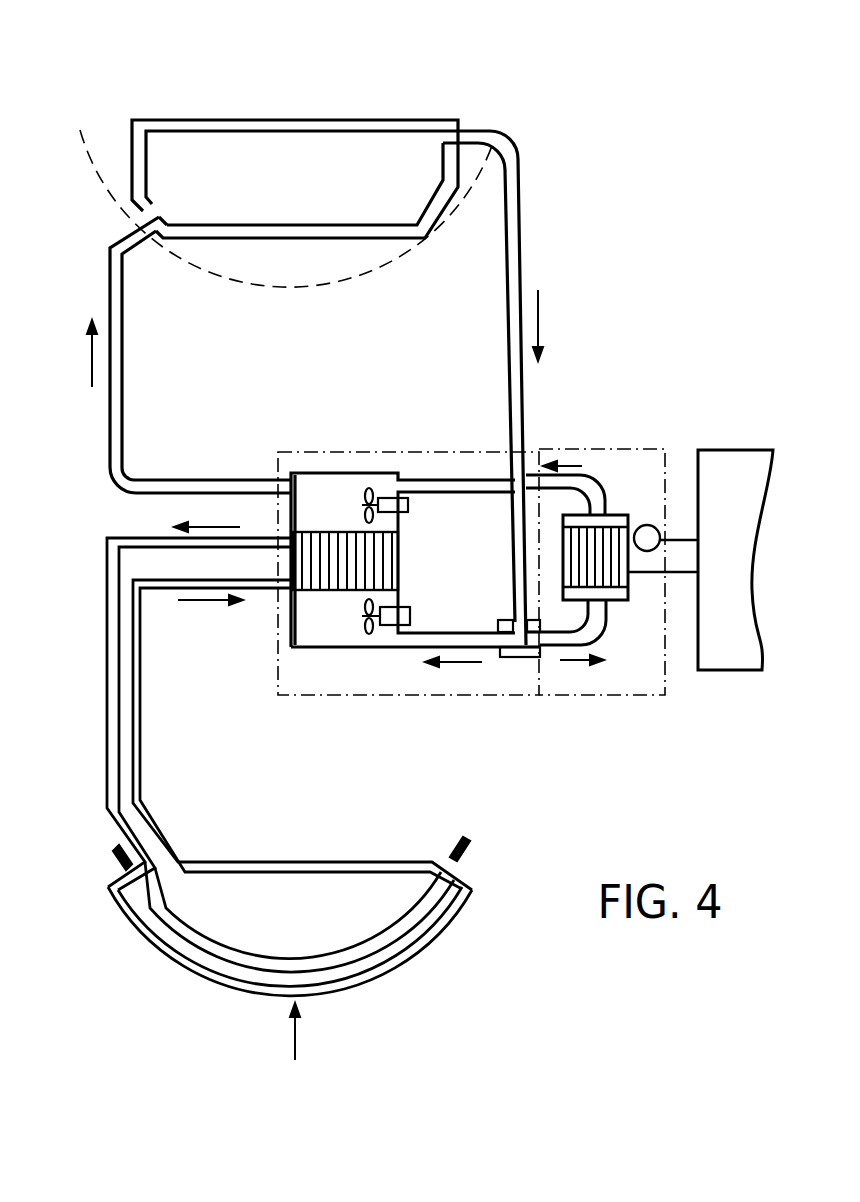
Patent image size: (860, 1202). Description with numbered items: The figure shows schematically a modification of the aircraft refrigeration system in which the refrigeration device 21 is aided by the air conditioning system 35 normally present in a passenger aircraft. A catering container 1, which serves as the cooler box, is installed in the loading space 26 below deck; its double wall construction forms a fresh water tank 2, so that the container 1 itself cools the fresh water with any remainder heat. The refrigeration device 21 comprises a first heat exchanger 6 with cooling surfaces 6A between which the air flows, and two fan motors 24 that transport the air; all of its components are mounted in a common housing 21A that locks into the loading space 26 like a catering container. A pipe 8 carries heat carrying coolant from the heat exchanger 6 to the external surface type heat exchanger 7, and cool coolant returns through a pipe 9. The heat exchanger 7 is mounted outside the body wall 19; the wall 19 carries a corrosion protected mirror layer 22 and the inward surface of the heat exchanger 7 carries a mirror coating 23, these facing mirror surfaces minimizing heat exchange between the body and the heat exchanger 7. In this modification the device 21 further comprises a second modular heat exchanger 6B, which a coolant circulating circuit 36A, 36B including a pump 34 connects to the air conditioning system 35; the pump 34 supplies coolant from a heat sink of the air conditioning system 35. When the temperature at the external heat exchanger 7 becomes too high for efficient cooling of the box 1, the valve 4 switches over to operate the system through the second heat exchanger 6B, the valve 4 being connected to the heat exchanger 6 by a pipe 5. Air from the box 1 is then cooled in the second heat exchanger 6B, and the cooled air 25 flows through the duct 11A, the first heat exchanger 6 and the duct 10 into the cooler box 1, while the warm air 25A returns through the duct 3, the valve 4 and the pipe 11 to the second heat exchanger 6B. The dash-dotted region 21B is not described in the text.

The catering container 1 is at (183, 152).
The fresh water tank 2 is at (322, 120).
The return conduit 3 is at (520, 197).
The valve 4 is at (518, 660).
The pipe or conduit 5 is at (418, 642).
The heat exchanger 6 is at (317, 635).
The cooling surfaces 6A is at (322, 560).
The second modular heat exchanger 6B is at (615, 517).
The surface type heat exchanger 7 is at (423, 943).
The pipe or conduit 8 is at (119, 658).
The pipe or duct 9 is at (140, 738).
The conduit 10 is at (122, 330).
The pipe or conduit 11 is at (565, 637).
The pipe or conduit 11A is at (532, 480).
The wall 19 is at (457, 855).
The refrigeration device 21 is at (443, 407).
The common housing 21A is at (355, 450).
The second section 21B is at (585, 447).
The mirror layer or film 22 is at (115, 848).
The mirror coating 23 is at (183, 942).
The fan motors 24 is at (408, 505).
The cold air 25 is at (115, 410).
The warm air 25A is at (520, 262).
The loading space 26 is at (313, 263).
The pump 34 is at (653, 520).
The air conditioning system 35 is at (727, 663).
The coolant circulating circuit 36A is at (680, 537).
The coolant circulating circuit 36B is at (660, 574).